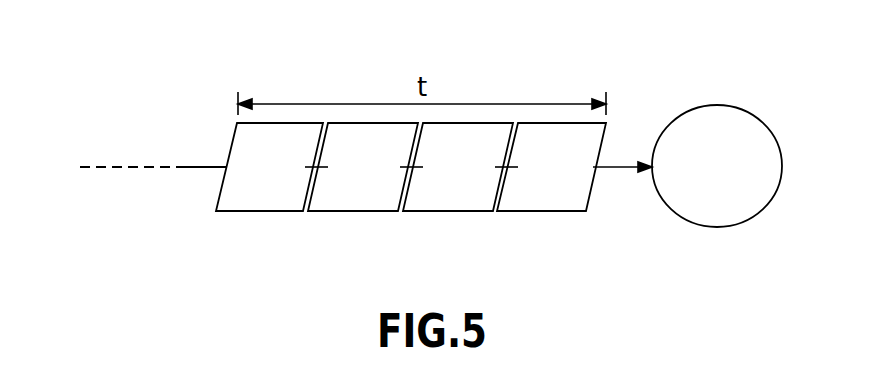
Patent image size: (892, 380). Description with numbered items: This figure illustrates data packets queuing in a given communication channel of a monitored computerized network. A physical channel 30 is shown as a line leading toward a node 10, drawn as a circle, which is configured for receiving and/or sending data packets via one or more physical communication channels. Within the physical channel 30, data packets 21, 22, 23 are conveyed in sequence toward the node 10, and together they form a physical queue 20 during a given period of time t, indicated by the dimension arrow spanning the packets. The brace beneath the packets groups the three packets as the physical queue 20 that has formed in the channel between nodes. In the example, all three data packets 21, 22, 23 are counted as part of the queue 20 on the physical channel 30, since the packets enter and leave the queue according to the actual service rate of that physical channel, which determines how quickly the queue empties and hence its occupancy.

The node 10 is at (701, 179).
The physical queue 20 is at (405, 197).
The data packet 21 is at (551, 167).
The data packet 22 is at (363, 167).
The data packet 23 is at (269, 167).
The physical channel 30 is at (203, 166).